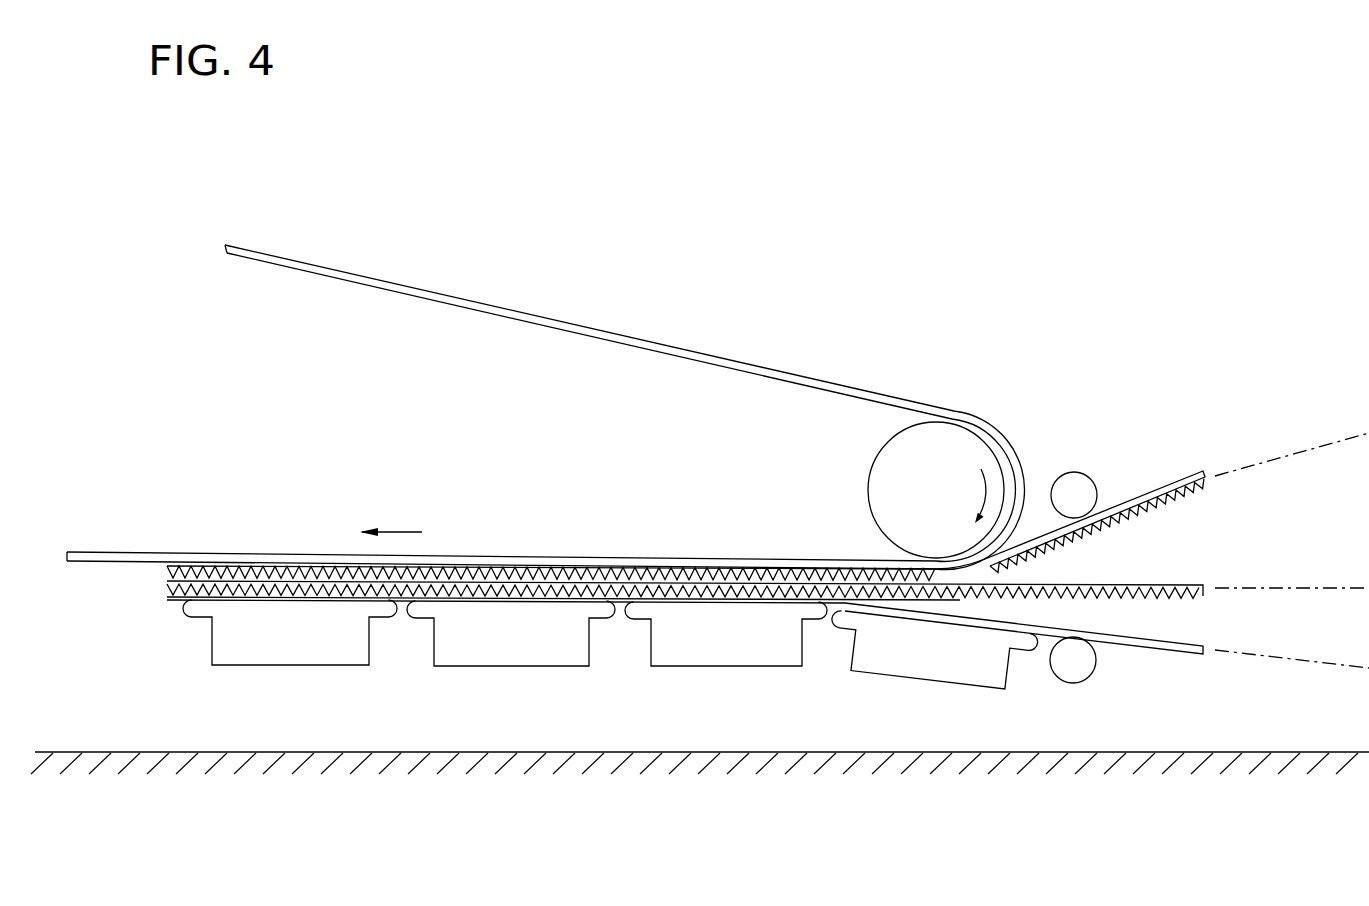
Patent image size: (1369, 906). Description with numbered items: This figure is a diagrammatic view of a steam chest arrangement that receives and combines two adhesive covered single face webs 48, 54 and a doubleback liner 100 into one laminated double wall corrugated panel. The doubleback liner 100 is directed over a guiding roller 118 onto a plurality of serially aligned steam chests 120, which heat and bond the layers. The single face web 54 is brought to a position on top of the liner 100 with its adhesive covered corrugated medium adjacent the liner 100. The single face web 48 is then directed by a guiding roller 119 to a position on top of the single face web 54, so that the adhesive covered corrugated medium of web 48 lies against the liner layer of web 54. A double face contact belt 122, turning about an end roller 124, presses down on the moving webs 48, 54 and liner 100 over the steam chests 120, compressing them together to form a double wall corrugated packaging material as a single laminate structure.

The double face contact belt 122 is at (845, 395).
The end roller 124 is at (960, 505).
The guiding roller 119 is at (1059, 488).
The single face web 48 is at (1140, 496).
The single face web 54 is at (1157, 581).
The doubleback liner 100 is at (1145, 638).
The guiding roller 118 is at (1066, 662).
The steam chests 120 is at (278, 645).